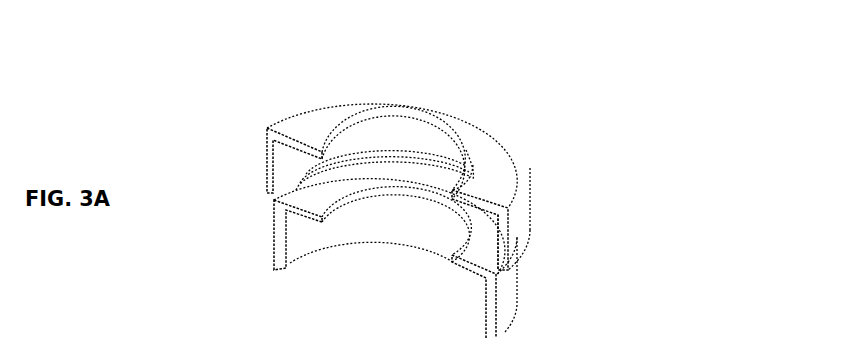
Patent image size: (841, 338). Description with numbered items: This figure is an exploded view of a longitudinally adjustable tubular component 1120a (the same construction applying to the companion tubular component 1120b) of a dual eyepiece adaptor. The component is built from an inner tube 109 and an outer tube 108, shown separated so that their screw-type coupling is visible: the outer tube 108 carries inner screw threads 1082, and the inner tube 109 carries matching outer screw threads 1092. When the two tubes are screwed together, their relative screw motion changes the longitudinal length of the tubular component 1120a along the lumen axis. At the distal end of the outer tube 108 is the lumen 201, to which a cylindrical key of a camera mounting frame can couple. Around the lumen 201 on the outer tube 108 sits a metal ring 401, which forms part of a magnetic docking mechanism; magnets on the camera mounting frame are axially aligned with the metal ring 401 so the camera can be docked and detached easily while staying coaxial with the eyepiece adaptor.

The outer tube 108 is at (266, 152).
The inner tube 109 is at (273, 228).
The lumen 201 is at (371, 133).
The metal ring 401 is at (478, 178).
The inner screw threads 1082 is at (498, 237).
The outer screw threads 1092 is at (502, 295).
The longitudinally adjustable tubular component 1120a is at (580, 112).
The longitudinally adjustable tubular component 1120b is at (701, 330).